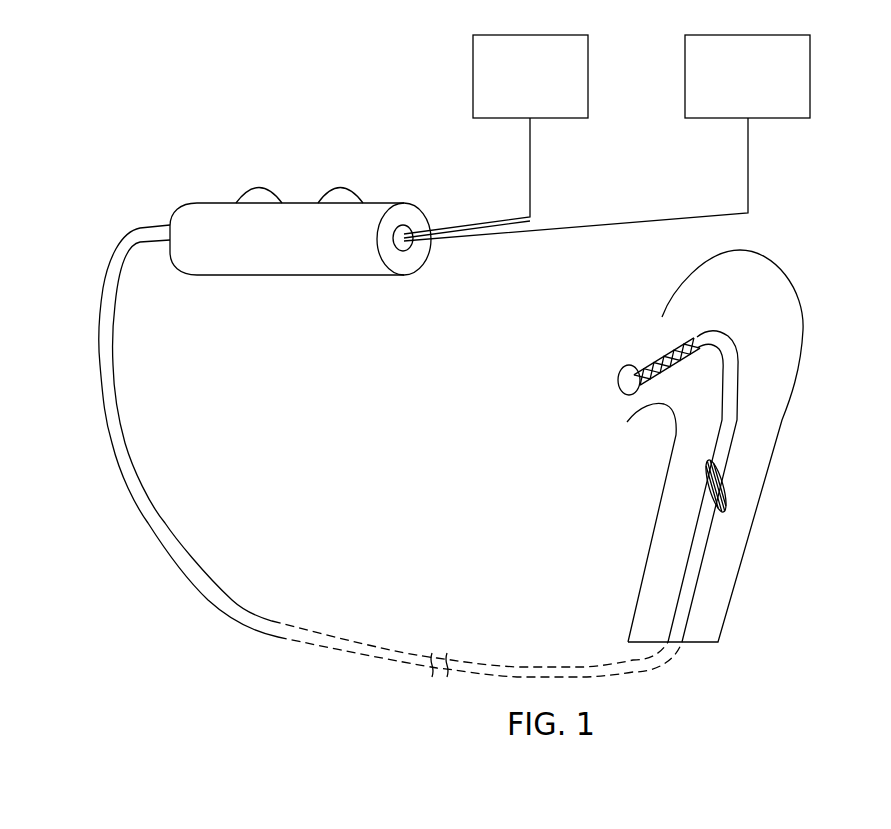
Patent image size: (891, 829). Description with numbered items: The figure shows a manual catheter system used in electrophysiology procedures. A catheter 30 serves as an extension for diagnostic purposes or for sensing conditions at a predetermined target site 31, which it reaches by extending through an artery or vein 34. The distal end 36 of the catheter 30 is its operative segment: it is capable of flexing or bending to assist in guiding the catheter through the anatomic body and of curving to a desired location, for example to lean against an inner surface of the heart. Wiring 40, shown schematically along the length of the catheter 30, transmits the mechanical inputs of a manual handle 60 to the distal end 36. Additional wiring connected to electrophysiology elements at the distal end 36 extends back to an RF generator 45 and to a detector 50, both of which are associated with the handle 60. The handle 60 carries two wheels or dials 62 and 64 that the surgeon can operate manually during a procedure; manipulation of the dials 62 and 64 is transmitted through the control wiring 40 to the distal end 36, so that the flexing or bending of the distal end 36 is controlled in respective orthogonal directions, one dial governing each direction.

The catheter 30 is at (689, 602).
The predetermined target site 31 is at (628, 382).
The artery or vein 34 is at (739, 527).
The distal end 36 is at (659, 348).
The wiring 40 is at (724, 483).
The RF generator 45 is at (556, 109).
The detector 50 is at (780, 107).
The manual handle 60 is at (310, 259).
The wheel or dial 62 is at (262, 187).
The wheel or dial 64 is at (343, 187).